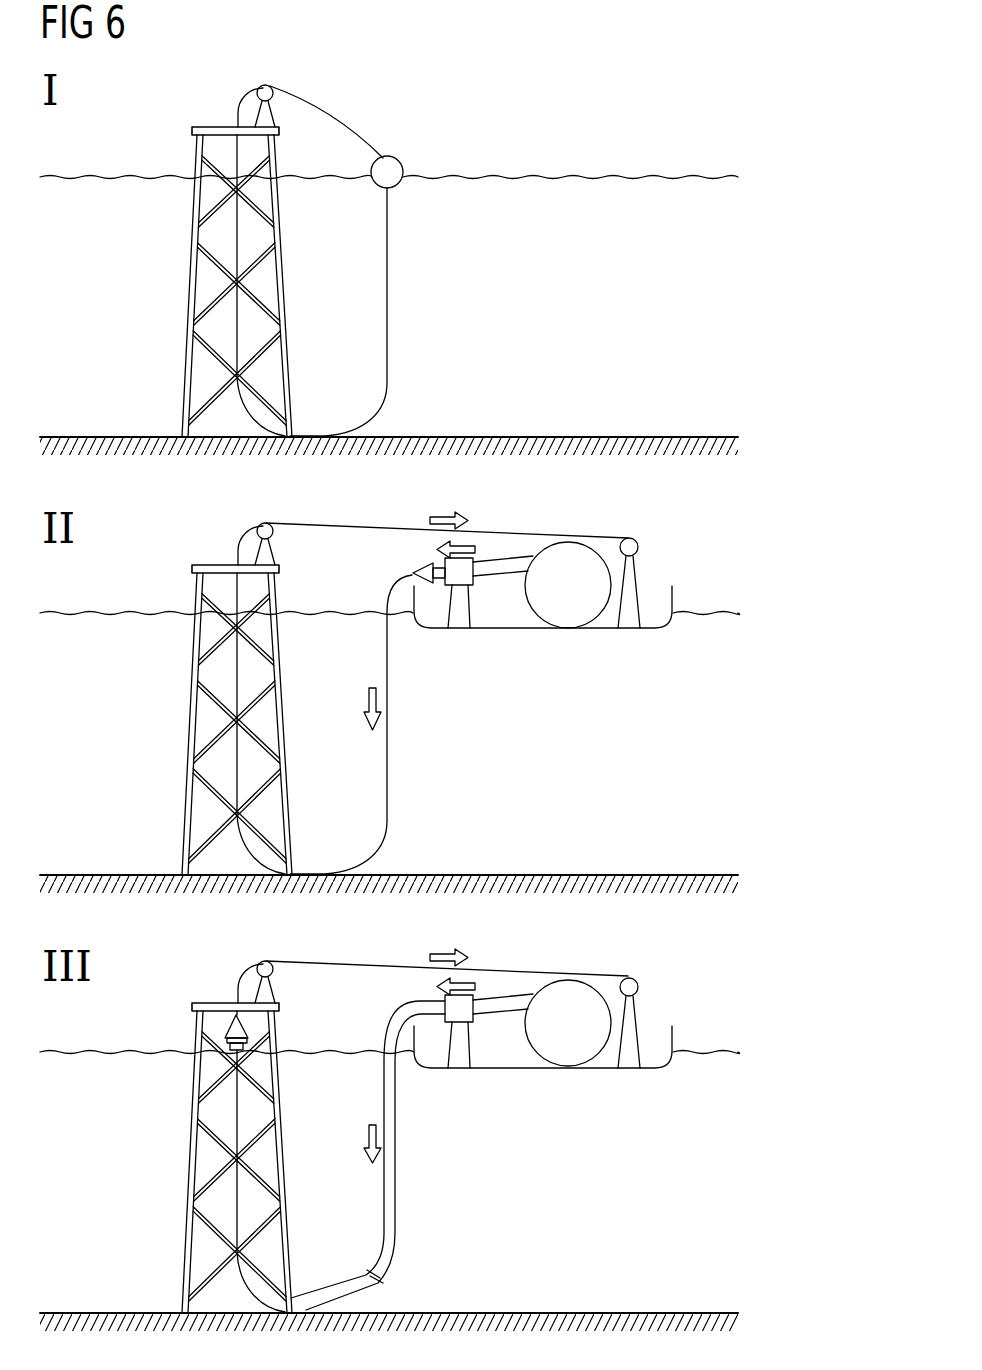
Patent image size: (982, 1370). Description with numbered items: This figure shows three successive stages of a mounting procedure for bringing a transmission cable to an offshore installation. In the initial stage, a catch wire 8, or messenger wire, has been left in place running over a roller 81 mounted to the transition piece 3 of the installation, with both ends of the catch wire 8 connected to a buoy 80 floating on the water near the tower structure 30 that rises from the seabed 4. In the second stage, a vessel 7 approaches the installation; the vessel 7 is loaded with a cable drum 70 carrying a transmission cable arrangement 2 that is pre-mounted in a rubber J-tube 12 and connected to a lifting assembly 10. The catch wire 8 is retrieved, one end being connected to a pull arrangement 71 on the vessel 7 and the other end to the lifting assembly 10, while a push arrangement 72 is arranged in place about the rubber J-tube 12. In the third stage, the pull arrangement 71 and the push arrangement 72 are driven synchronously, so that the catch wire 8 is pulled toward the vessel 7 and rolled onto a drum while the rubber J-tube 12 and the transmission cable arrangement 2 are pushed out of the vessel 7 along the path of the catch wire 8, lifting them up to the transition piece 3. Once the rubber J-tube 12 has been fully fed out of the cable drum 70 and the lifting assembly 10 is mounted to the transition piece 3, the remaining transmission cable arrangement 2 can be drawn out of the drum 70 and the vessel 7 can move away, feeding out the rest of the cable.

The transmission cable arrangement 2 is at (388, 285).
The transition piece 3 is at (218, 125).
The seabed 4 is at (118, 442).
The vessel 7 is at (677, 598).
The catch wire 8 is at (345, 118).
The lifting assembly 10 is at (435, 563).
The rubber J-tube 12 is at (487, 576).
The tower structure 30 is at (197, 270).
The cable drum 70 is at (568, 610).
The pull arrangement 71 is at (638, 548).
The push arrangement 72 is at (458, 615).
The buoy 80 is at (393, 165).
The roller 81 is at (272, 98).